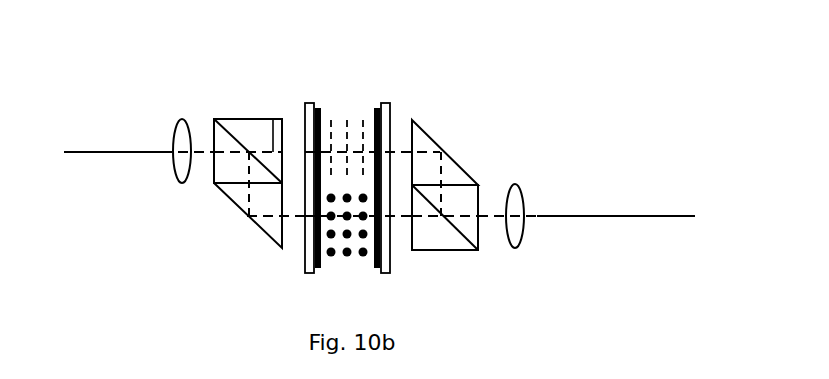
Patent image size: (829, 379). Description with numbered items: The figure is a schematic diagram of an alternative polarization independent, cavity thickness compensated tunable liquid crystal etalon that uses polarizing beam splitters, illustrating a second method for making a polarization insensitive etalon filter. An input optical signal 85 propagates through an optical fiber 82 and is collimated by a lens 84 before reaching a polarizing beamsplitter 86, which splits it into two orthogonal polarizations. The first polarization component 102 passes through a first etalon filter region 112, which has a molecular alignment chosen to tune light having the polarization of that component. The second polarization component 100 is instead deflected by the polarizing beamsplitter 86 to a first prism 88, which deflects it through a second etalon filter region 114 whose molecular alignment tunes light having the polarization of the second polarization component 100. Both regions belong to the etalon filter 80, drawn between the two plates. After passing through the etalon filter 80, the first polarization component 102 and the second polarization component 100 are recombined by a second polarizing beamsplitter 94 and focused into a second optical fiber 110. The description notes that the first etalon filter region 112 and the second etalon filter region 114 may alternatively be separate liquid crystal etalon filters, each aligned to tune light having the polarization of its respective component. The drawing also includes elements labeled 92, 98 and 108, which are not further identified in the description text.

The etalon filter 80 is at (338, 101).
The optical fiber 82 is at (77, 152).
The lens 84 is at (173, 139).
The input optical signal 85 is at (201, 150).
The polarizing beamsplitter 86 is at (256, 119).
The first prism 88 is at (265, 236).
The polarizing beam splitter cube 92 is at (443, 252).
The second polarizing beamsplitter 94 is at (526, 202).
The prism 98 is at (455, 163).
The second polarization component 100 is at (217, 175).
The first polarization component 102 is at (278, 119).
The output beam path 108 is at (488, 218).
The second optical fiber 110 is at (590, 216).
The first etalon filter region 112 is at (393, 185).
The second etalon filter region 114 is at (300, 196).